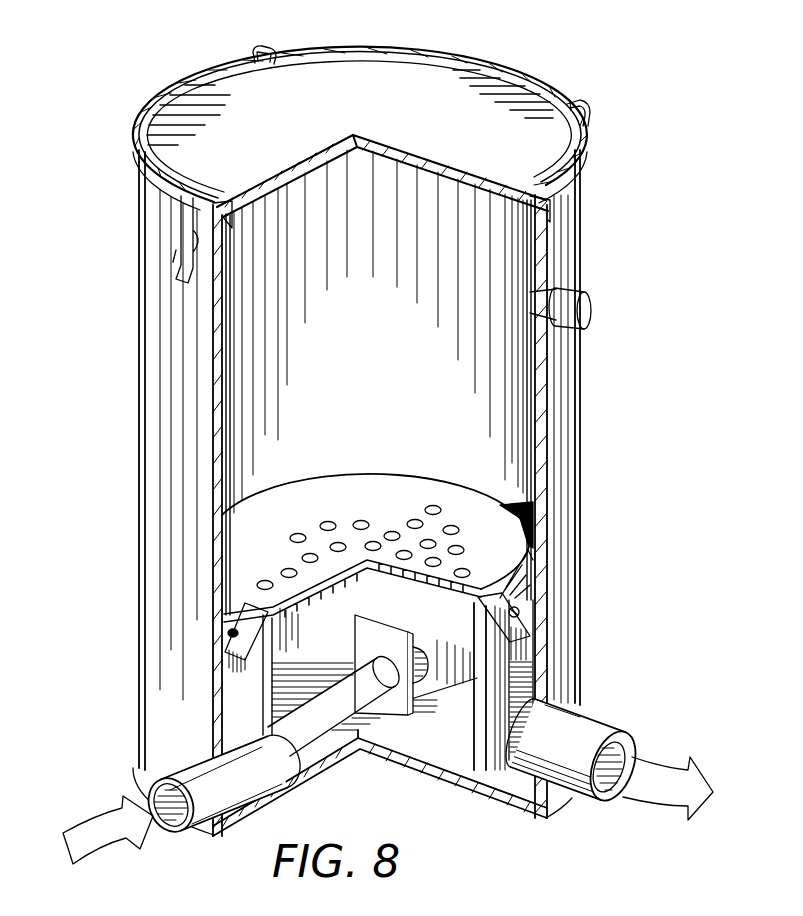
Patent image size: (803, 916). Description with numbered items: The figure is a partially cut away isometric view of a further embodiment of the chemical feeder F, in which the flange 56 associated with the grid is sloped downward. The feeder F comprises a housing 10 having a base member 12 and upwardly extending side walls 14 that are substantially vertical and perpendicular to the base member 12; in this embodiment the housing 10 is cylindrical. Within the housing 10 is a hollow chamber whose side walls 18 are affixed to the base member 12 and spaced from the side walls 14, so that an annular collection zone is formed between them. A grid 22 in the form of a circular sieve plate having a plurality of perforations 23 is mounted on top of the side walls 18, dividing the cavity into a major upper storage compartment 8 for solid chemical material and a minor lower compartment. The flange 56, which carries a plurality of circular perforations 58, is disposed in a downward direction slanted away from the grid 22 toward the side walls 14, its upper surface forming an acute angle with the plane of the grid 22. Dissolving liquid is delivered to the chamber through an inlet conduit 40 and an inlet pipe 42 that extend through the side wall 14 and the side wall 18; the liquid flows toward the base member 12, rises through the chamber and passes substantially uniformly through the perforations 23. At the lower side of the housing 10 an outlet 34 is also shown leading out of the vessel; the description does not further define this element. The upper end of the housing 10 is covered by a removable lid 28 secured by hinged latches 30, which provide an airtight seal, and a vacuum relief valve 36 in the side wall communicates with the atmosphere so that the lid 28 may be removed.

The upper storage compartment 8 is at (364, 307).
The housing 10 is at (597, 453).
The base member 12 is at (495, 800).
The side walls 14 is at (140, 397).
The side walls of chamber 18 is at (530, 682).
The grid 22 is at (377, 532).
The perforations 23 is at (431, 507).
The lid 28 is at (410, 72).
The latches 30 is at (262, 47).
The outlet pipe 34 is at (588, 702).
The vacuum relief valve 36 is at (588, 310).
The inlet conduit 40 is at (192, 768).
The inlet pipe 42 is at (332, 728).
The flange 56 is at (530, 568).
The perforations 58 is at (515, 600).
The feeder F is at (633, 380).